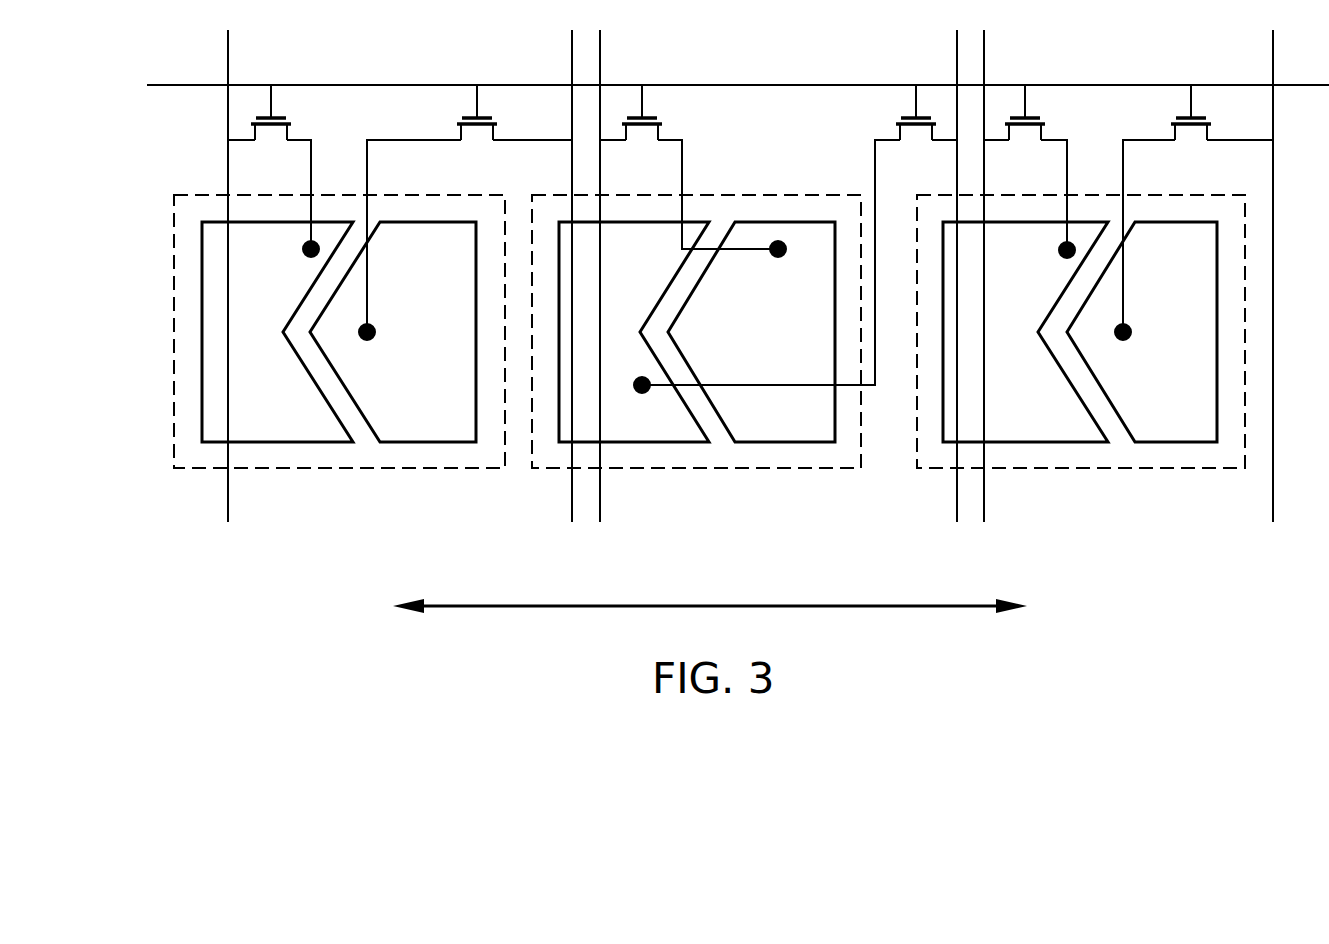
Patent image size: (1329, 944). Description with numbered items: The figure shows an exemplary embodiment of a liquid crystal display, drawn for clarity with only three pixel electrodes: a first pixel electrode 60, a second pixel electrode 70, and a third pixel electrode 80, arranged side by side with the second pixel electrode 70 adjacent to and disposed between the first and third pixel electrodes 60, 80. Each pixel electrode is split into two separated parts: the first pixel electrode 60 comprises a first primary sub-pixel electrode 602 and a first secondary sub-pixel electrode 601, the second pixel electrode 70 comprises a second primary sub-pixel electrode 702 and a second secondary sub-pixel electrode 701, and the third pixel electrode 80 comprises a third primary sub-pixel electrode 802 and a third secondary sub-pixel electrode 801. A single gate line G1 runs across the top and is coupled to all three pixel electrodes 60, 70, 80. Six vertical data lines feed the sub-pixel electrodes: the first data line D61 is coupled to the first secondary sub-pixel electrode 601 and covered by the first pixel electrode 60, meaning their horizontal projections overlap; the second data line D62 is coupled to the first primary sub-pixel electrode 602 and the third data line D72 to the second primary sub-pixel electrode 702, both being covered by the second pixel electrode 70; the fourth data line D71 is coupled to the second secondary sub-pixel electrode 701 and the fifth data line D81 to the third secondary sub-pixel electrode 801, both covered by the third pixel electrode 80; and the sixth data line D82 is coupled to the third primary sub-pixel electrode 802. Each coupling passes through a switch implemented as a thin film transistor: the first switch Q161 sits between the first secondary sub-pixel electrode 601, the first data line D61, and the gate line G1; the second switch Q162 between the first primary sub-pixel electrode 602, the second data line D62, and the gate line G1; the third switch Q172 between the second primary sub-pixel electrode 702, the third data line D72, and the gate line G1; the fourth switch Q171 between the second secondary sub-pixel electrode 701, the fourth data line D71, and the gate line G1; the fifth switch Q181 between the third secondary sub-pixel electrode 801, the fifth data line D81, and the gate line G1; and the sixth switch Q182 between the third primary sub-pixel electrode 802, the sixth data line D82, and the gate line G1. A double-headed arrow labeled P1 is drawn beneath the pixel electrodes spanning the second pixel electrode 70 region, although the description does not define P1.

The gate line G1 is at (720, 84).
The first data line D61 is at (228, 291).
The second data line D62 is at (555, 291).
The fourth data line D71 is at (940, 291).
The third data line D72 is at (613, 291).
The fifth data line D81 is at (1000, 291).
The sixth data line D82 is at (1275, 291).
The first switch Q161 is at (273, 171).
The second switch Q162 is at (465, 212).
The fourth switch Q171 is at (795, 239).
The third switch Q172 is at (693, 171).
The fifth switch Q181 is at (1029, 171).
The sixth switch Q182 is at (1194, 212).
The first pixel electrode 60 is at (339, 350).
The second pixel electrode 70 is at (696, 350).
The third pixel electrode 80 is at (1081, 350).
The first secondary sub-pixel electrode 601 is at (277, 332).
The first primary sub-pixel electrode 602 is at (393, 332).
The second secondary sub-pixel electrode 701 is at (634, 332).
The second primary sub-pixel electrode 702 is at (751, 332).
The third secondary sub-pixel electrode 801 is at (1025, 332).
The third primary sub-pixel electrode 802 is at (1142, 332).
The pixel pitch P1 is at (710, 592).